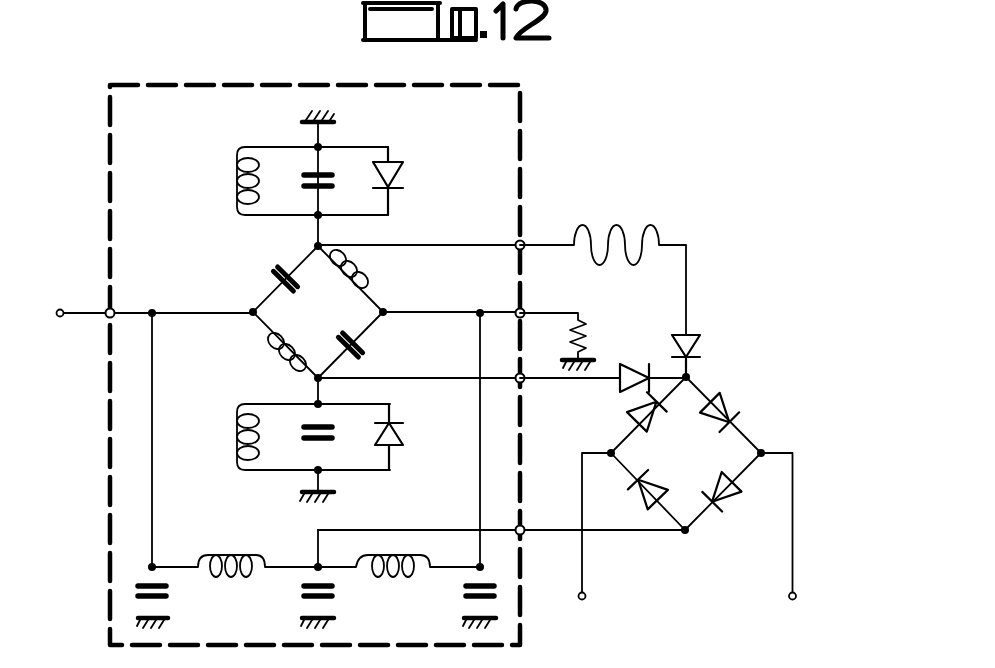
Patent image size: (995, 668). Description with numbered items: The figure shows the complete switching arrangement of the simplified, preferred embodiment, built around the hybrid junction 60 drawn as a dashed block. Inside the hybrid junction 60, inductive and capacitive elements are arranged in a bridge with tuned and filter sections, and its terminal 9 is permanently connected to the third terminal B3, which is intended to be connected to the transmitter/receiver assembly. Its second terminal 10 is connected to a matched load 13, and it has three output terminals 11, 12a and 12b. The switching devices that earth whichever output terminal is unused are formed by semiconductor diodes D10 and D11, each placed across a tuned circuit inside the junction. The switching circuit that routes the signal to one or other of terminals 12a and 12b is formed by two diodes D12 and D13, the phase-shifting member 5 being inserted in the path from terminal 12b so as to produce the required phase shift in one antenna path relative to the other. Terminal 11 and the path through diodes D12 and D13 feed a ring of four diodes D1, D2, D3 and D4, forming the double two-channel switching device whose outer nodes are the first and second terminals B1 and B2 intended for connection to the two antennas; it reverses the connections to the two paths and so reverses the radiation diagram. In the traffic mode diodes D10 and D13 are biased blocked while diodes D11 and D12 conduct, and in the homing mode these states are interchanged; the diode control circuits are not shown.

The hybrid junction 60 is at (521, 125).
The terminal 9 is at (108, 318).
The third terminal B3 is at (61, 310).
The output terminal 12b is at (522, 242).
The second terminal 10 is at (522, 311).
The output terminal 12a is at (523, 381).
The output terminal 11 is at (523, 528).
The matched load 13 is at (570, 338).
The phase-shifting member 5 is at (657, 225).
The semiconductor diode D11 is at (403, 174).
The semiconductor diode D10 is at (398, 434).
The diode D12 is at (630, 364).
The diode D13 is at (700, 356).
The diode D1 is at (638, 504).
The diode D2 is at (734, 410).
The diode D3 is at (732, 502).
The diode D4 is at (636, 410).
The first terminal B1 is at (585, 596).
The second terminal B2 is at (789, 596).